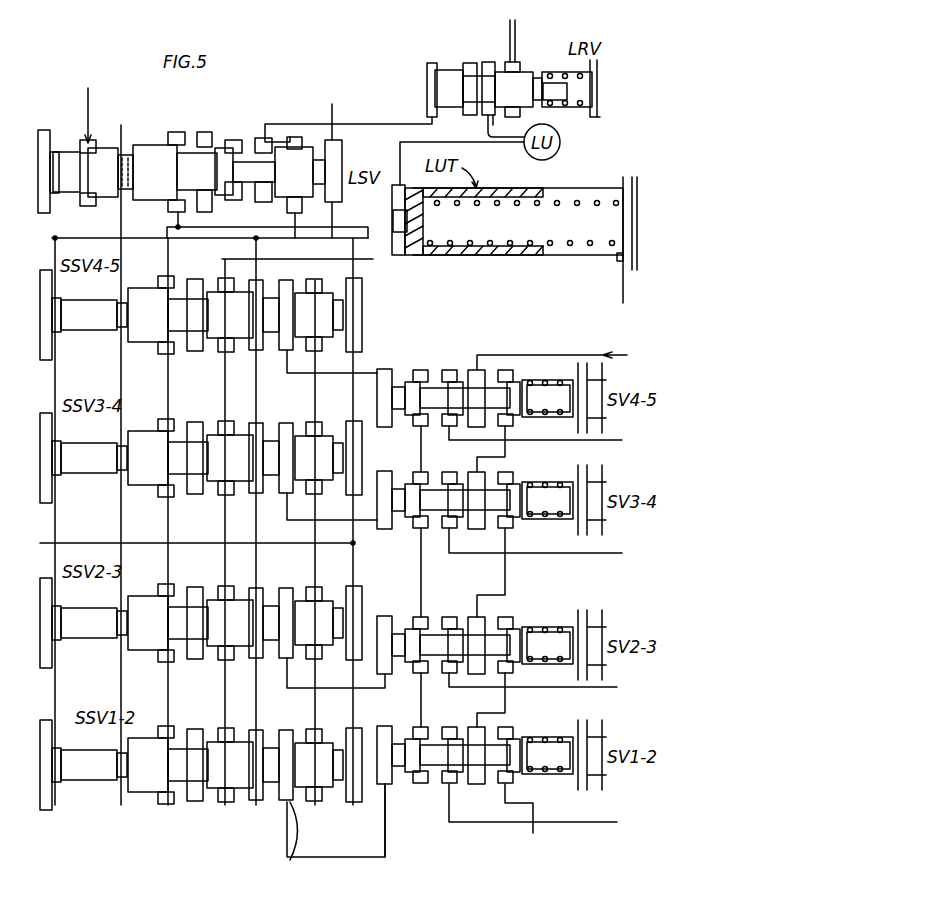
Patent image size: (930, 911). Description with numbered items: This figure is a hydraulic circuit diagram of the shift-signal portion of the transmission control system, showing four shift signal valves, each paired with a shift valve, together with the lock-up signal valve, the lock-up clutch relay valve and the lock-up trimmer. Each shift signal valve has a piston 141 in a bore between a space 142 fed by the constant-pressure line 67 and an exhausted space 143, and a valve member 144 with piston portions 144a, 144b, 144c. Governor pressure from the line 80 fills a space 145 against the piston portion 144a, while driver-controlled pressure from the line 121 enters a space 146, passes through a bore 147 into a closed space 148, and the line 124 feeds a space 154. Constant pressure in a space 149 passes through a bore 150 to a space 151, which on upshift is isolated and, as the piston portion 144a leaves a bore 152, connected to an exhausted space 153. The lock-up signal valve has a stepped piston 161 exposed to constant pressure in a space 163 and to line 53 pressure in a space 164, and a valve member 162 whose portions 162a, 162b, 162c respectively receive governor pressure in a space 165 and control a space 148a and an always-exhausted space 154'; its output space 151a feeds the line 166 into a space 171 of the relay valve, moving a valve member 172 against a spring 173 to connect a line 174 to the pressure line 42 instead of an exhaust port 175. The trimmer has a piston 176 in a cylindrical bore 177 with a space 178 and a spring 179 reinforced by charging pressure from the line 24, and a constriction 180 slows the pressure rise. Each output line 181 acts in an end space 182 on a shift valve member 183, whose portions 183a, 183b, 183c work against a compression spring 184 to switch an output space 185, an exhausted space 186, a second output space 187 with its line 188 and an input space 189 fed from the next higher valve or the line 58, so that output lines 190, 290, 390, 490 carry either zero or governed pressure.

The torque converter charging pressure line 24 is at (621, 284).
The line at pressure PK 42 is at (516, 38).
The line from master controller 53 is at (96, 108).
The line at pressure P2 58 is at (532, 355).
The constant pressure line 67 is at (58, 676).
The governor pressure line 80 is at (352, 703).
The driver-controlled pressure line 121 is at (171, 253).
The shift point inhibitor line 124 is at (286, 258).
The piston 141 is at (80, 797).
The space 142 is at (58, 735).
The space 143 is at (118, 795).
The valve member 144 is at (186, 775).
The piston portion 144a is at (320, 752).
The central piston portion 144b is at (247, 779).
The piston portion 144c is at (144, 720).
The space 145 is at (355, 805).
The space 146 is at (168, 725).
The bore 147 is at (197, 736).
The closed space 148 is at (188, 765).
The space 148a is at (202, 132).
The space 149 is at (258, 728).
The bore 150 is at (272, 798).
The space 151 is at (286, 728).
The output space 151a is at (262, 197).
The bore 152 is at (292, 860).
The exhausted space 153 is at (315, 800).
The space 154 is at (229, 827).
The space 154' is at (221, 149).
The stepped piston 161 is at (78, 140).
The valve member 162 is at (250, 128).
The piston portion 162a is at (290, 160).
The piston portion 162b is at (218, 170).
The piston portion 162c is at (150, 160).
The space 163 is at (57, 142).
The space 164 is at (88, 206).
The space 165 is at (333, 150).
The line 166 is at (384, 124).
The space 171 is at (427, 66).
The valve member 172 is at (485, 90).
The spring 173 is at (552, 72).
The line 174 is at (497, 148).
The exhaust port 175 is at (462, 68).
The piston 176 is at (462, 257).
The cylindrical bore 177 is at (408, 258).
The space 178 is at (392, 204).
The spring 179 is at (565, 246).
The constriction 180 is at (482, 128).
The output line 181 is at (392, 815).
The end space 182 is at (384, 740).
The shift valve member 183 is at (480, 757).
The piston portion 183a is at (414, 768).
The piston portion 183b is at (460, 775).
The piston portion 183c is at (527, 774).
The compression spring 184 is at (545, 740).
The output space 185 is at (475, 787).
The exhausted space 186 is at (437, 800).
The second output space 187 is at (513, 750).
The output line 188 is at (485, 687).
The input space 189 is at (490, 740).
The output line 190 is at (538, 825).
The output line 290 is at (425, 675).
The output line 390 is at (470, 554).
The output line 490 is at (472, 441).